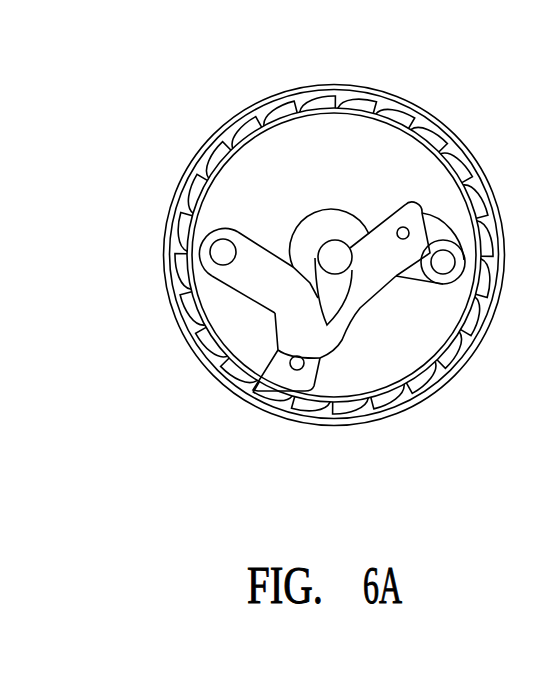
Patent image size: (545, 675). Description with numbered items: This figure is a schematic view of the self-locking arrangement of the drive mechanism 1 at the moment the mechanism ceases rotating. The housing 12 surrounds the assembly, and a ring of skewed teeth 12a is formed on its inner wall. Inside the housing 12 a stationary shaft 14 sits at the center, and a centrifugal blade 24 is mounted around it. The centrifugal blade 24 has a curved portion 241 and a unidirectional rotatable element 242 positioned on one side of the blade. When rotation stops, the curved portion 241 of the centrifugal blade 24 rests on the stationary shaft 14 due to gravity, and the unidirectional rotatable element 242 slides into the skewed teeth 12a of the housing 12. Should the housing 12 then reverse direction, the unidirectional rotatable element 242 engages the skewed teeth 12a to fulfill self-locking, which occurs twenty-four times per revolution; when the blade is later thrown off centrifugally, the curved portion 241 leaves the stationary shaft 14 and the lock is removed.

The ratchet device 1 is at (325, 240).
The housing 12 is at (277, 93).
The skewed teeth 12a is at (250, 392).
The stationary shaft 14 is at (336, 247).
The centrifugal blade 24 is at (332, 261).
The curved portion 241 is at (340, 343).
The unidirectional rotatable element 242 is at (282, 382).